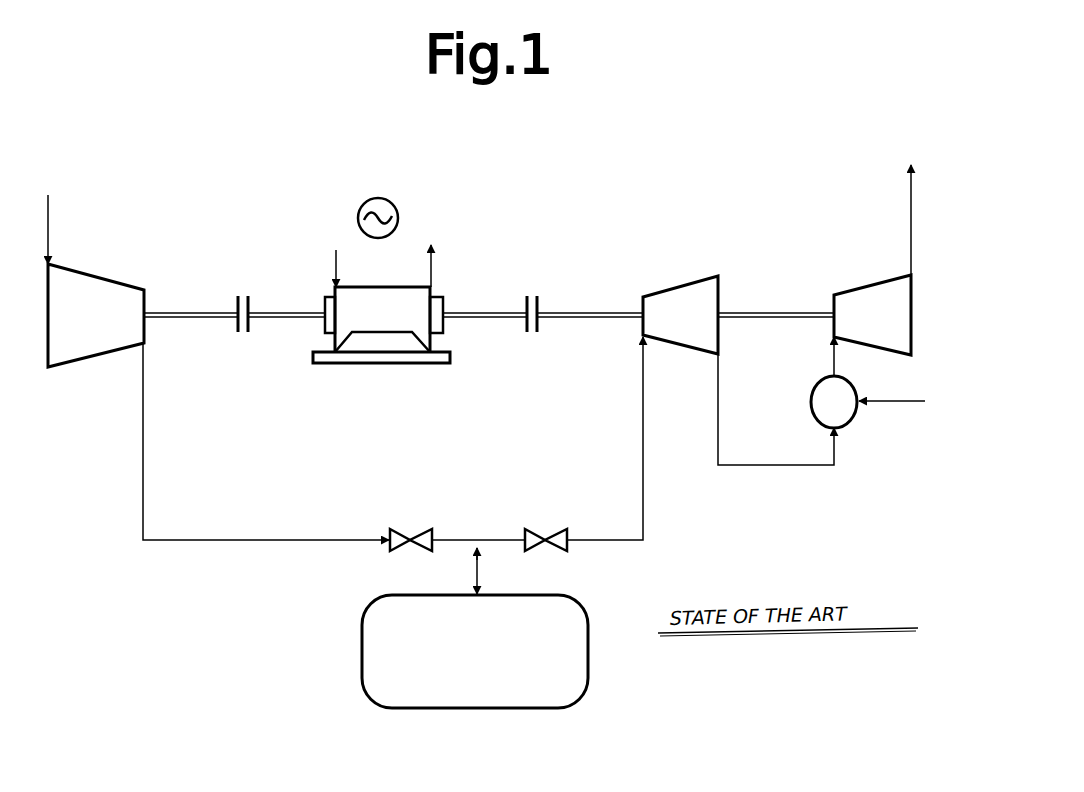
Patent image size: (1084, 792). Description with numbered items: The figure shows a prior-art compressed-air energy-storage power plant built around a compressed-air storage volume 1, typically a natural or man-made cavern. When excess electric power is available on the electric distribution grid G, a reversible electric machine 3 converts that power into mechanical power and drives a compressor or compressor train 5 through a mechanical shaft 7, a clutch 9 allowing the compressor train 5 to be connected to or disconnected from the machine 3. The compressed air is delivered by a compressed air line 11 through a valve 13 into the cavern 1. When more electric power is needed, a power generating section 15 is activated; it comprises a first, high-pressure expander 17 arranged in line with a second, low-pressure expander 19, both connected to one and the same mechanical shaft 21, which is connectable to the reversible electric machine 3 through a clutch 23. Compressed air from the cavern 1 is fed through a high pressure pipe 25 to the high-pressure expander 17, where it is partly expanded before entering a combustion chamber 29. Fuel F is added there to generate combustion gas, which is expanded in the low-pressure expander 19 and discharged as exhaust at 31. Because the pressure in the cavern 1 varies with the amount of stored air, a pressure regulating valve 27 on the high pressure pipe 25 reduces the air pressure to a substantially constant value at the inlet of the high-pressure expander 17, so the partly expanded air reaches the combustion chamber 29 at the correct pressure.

The compressed-air storage volume 1 is at (361, 650).
The reversible electric machine 3 is at (368, 350).
The compressor train 5 is at (97, 344).
The mechanical shaft 7 is at (172, 322).
The clutch 9 is at (251, 300).
The compressed air line 11 is at (143, 468).
The valve 13 is at (402, 535).
The power generating section 15 is at (796, 250).
The high-pressure expander 17 is at (683, 285).
The low-pressure expander 19 is at (872, 292).
The mechanical shaft 21 is at (606, 320).
The clutch 23 is at (541, 305).
The high pressure pipe 25 is at (641, 468).
The pressure regulating valve 27 is at (553, 530).
The combustion chamber 29 is at (843, 415).
The exhaust discharge 31 is at (906, 212).
The electric distribution grid G is at (404, 222).
The fuel F is at (892, 388).